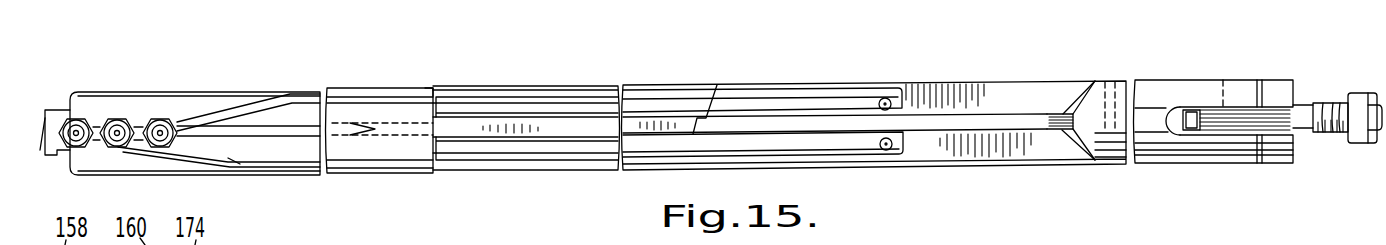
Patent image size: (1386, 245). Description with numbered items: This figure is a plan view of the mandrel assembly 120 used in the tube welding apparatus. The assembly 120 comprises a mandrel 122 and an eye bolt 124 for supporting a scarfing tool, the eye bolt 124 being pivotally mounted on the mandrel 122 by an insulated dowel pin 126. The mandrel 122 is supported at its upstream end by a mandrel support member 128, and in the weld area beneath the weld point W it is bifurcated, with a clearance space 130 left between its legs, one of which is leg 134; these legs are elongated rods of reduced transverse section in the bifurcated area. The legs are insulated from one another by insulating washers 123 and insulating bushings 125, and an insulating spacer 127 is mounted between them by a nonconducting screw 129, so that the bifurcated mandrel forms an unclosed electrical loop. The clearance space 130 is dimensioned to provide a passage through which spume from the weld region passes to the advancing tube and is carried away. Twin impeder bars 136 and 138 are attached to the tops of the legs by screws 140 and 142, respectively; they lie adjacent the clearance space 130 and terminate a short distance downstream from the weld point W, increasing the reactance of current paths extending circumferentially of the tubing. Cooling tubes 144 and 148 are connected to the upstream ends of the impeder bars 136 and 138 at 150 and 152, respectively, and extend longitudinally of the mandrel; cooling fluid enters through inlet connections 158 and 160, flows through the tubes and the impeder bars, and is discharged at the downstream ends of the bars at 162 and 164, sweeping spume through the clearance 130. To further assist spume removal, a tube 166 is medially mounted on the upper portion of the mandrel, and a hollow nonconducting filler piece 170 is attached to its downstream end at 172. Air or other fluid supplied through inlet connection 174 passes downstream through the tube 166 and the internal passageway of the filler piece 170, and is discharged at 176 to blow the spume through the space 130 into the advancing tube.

The mandrel assembly 120 is at (474, 182).
The mandrel 122 is at (592, 163).
The insulating washers 123 is at (1210, 135).
The eye bolt 124 is at (1337, 137).
The insulating bushings 125 is at (1266, 130).
The insulated dowel pin 126 is at (1245, 157).
The insulating spacer 127 is at (1077, 122).
The mandrel support member 128 is at (57, 156).
The nonconducting screw 129 is at (1128, 78).
The clearance space 130 is at (1022, 120).
The leg 134 is at (1008, 90).
The impeder bar 136 is at (822, 140).
The impeder bar 138 is at (818, 102).
The screw 140 is at (888, 151).
The screw 142 is at (889, 98).
The tube 144 is at (225, 165).
The tube 148 is at (247, 106).
The connection of tube to impeder bar 150 is at (426, 176).
The connection of tube to impeder bar 152 is at (425, 88).
The inlet connection 158 is at (81, 120).
The inlet connection 160 is at (119, 120).
The discharge end 162 is at (907, 151).
The discharge end 164 is at (905, 103).
The tube 166 is at (213, 130).
The hollow nonconducting filler piece 170 is at (520, 134).
The attachment of filler piece to tube 172 is at (420, 132).
The inlet connection 174 is at (162, 120).
The discharge end of filler piece 176 is at (717, 85).
The weld point W is at (848, 128).